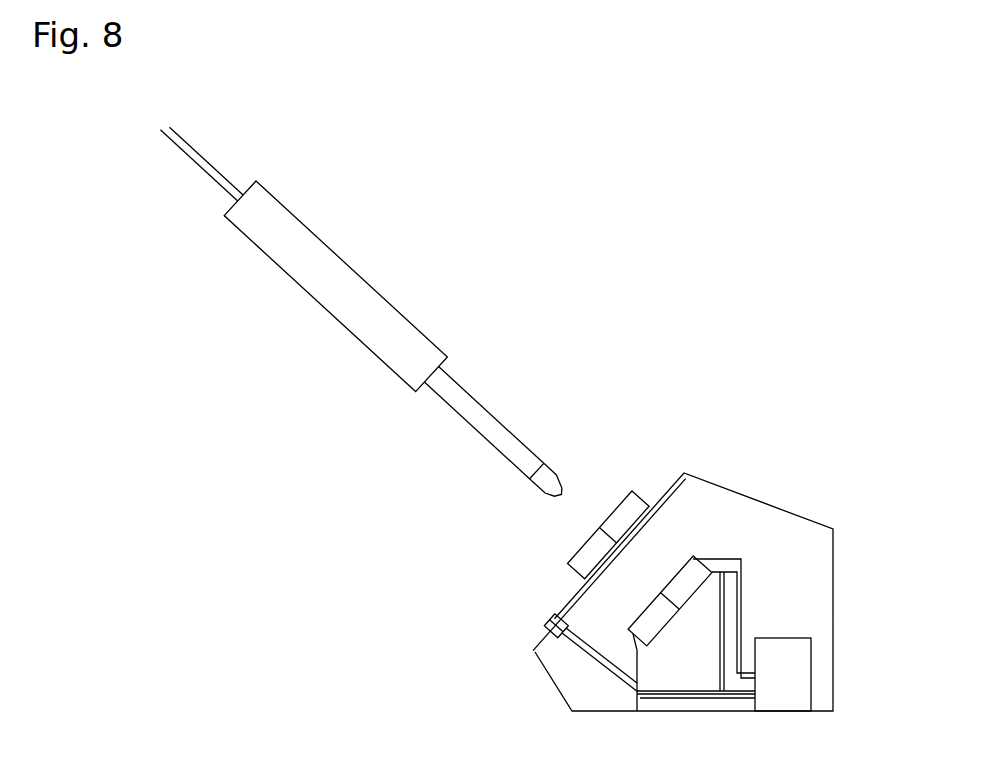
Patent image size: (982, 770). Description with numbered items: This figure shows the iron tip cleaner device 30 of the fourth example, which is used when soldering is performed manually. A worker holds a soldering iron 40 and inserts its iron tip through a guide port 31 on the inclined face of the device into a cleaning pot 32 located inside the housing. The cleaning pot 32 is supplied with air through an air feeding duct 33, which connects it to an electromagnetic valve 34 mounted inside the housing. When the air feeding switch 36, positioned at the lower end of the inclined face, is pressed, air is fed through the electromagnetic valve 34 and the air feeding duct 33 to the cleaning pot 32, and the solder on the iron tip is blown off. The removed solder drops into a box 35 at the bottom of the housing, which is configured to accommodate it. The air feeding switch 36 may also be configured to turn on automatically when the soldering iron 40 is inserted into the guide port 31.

The soldering iron 40 is at (318, 253).
The iron tip cleaner device 30 is at (677, 452).
The guide port 31 is at (592, 523).
The cleaning pot 32 is at (684, 554).
The air feeding duct 33 is at (745, 603).
The electromagnetic valve 34 is at (813, 683).
The box 35 is at (693, 682).
The air feeding switch 36 is at (545, 618).